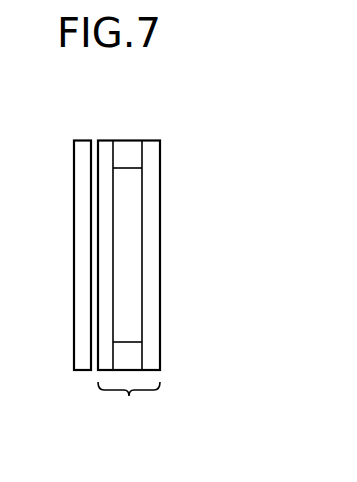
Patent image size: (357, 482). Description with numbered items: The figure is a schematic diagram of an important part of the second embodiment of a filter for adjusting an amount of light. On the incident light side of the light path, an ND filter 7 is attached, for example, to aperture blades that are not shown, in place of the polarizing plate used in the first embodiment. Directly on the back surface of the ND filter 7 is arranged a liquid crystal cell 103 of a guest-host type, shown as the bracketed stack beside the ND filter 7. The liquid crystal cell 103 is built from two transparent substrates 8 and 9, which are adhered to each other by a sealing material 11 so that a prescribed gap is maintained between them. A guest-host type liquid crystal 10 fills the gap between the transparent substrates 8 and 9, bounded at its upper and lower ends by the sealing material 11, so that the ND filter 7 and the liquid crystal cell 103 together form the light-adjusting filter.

The ND filter 7 is at (81, 140).
The transparent substrate 8 is at (105, 140).
The transparent substrate 9 is at (147, 162).
The guest-host type liquid crystal 10 is at (132, 232).
The sealing material 11 is at (138, 354).
The liquid crystal cell 103 is at (129, 408).